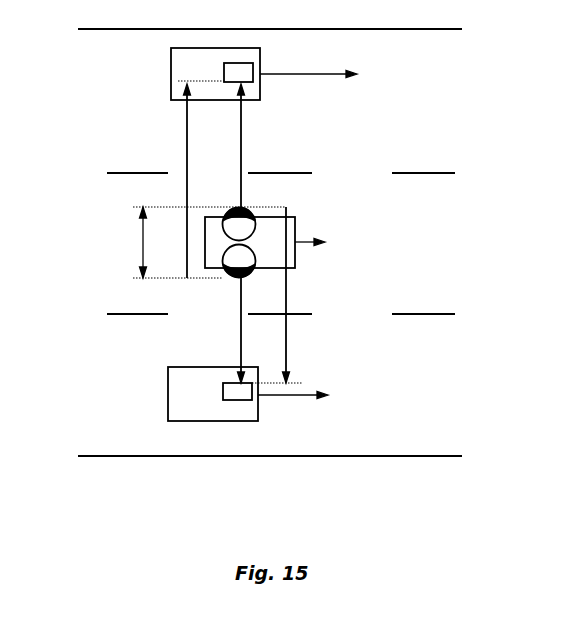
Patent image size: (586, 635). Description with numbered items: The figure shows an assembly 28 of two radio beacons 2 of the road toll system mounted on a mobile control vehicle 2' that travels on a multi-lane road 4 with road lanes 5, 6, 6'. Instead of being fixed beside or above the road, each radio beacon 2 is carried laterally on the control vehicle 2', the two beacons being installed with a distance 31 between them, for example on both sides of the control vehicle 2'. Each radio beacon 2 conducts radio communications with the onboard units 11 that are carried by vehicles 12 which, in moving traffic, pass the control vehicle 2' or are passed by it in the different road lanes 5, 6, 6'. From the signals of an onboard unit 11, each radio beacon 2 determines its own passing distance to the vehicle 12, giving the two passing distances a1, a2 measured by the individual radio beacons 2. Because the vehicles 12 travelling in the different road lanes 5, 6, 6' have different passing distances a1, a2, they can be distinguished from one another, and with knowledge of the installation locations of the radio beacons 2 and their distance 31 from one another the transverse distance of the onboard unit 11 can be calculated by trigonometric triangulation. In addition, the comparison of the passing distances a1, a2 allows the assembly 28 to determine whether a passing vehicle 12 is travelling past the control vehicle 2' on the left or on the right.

The radio beacon 2 is at (229, 243).
The control vehicle 2' is at (318, 277).
The multi-lane road 4 is at (106, 478).
The road lane 5 is at (398, 117).
The road lane 6 is at (405, 242).
The road lane 6' is at (402, 392).
The onboard unit 11 is at (240, 72).
The vehicle 12 is at (171, 65).
The assembly 28 is at (329, 197).
The distance 31 is at (142, 235).
The passing distance a1 is at (241, 144).
The passing distance a2 is at (186, 144).